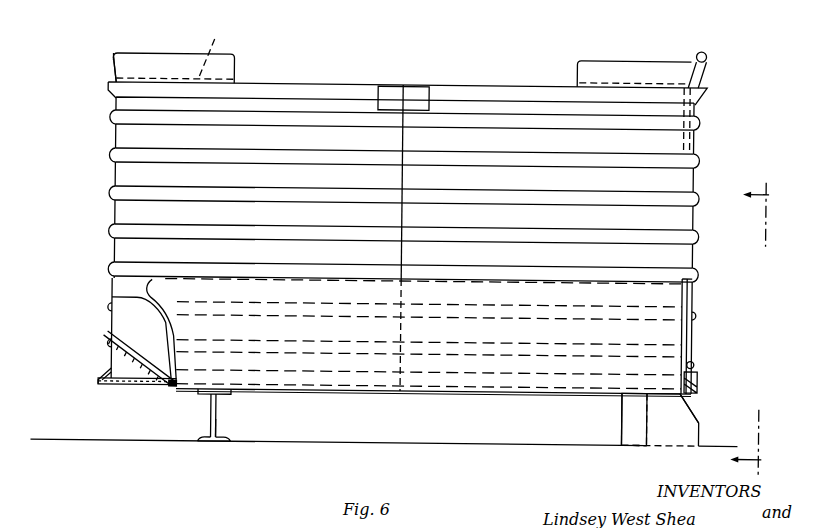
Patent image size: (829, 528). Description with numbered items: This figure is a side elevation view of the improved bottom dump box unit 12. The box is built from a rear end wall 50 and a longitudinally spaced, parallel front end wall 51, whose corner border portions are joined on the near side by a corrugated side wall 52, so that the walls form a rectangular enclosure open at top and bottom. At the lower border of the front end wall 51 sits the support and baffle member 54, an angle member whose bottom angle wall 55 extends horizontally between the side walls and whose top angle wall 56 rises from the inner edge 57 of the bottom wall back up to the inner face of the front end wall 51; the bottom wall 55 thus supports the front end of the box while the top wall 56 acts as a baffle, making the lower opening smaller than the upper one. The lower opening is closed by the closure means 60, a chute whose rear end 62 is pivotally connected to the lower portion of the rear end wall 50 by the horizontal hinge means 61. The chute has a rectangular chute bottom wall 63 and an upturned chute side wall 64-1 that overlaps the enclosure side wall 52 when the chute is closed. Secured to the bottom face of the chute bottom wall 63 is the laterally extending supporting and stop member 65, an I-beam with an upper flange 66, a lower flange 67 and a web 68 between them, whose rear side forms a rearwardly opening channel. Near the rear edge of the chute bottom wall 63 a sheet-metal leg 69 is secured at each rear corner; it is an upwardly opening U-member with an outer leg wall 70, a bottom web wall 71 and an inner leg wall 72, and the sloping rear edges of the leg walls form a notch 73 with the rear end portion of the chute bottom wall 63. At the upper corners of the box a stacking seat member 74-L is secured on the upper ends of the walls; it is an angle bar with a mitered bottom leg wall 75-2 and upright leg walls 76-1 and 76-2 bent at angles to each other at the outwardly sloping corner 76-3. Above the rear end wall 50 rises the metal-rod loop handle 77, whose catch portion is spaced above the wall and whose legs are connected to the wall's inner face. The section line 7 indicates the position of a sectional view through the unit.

The section line 7- 7 is at (760, 330).
The bottom dump box unit 12 is at (703, 132).
The rear end wall 50 is at (695, 179).
The front end wall 51 is at (113, 173).
The side wall 52 is at (318, 105).
The support and baffle member 54 is at (114, 394).
The bottom angle wall 55 is at (130, 386).
The top angle wall 56 is at (136, 346).
The inner edge 57 is at (173, 388).
The closure means 60 is at (439, 394).
The horizontal hinge means 61 is at (707, 355).
The rear end of the closure means 62 is at (700, 382).
The chute bottom wall 63 is at (302, 391).
The chute side wall 64-1 is at (428, 334).
The supporting and stop member 65 is at (224, 405).
The upper flange 66 is at (205, 394).
The lower flange 67 is at (208, 436).
The web 68 is at (220, 424).
The leg 69 is at (623, 424).
The outer leg wall 70 is at (660, 419).
The bottom web wall 71 is at (634, 441).
The inner leg wall 72 is at (634, 419).
The notch 73 is at (696, 398).
The stacking seat member 74-L is at (111, 53).
The mitered bottom leg wall 75-2 is at (226, 54).
The upright leg wall 76-1 is at (110, 72).
The upright leg wall 76-2 is at (156, 61).
The outwardly sloping corner 76-3 is at (110, 62).
The loop handle 77 is at (704, 48).